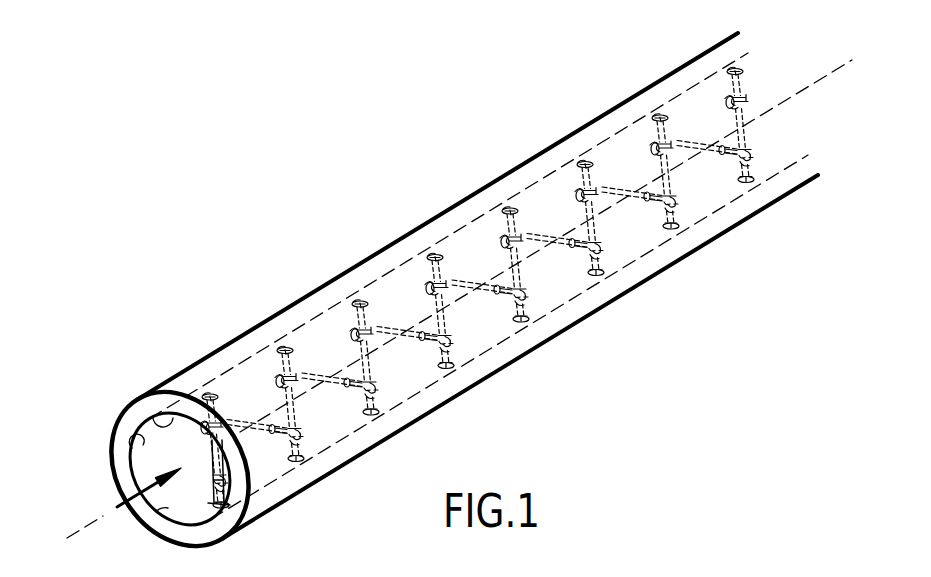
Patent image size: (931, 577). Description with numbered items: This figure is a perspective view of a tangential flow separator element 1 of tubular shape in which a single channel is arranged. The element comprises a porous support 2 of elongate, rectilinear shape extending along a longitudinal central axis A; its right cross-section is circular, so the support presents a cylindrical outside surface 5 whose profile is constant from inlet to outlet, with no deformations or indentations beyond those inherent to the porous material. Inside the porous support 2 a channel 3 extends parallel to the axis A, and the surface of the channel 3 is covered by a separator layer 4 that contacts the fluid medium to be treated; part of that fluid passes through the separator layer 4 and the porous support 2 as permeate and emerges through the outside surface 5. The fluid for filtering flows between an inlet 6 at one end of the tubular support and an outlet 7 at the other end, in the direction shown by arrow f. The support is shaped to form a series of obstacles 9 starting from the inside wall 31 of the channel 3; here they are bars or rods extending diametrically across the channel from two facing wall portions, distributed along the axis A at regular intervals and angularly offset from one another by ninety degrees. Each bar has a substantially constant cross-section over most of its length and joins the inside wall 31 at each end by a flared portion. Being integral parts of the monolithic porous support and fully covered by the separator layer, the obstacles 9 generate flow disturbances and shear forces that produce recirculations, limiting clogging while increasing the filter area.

The tangential flow separator element 1 is at (444, 305).
The porous support 2 is at (203, 537).
The channel 3 is at (140, 440).
The inside wall of the channel 31 is at (148, 417).
The separator layer 4 is at (158, 508).
The outside surface 5 is at (508, 169).
The inlet 6 is at (113, 467).
The outlet 7 is at (756, 62).
The obstacles 9 is at (403, 328).
The longitudinal central axis A is at (85, 528).
The flow direction arrow f is at (149, 479).